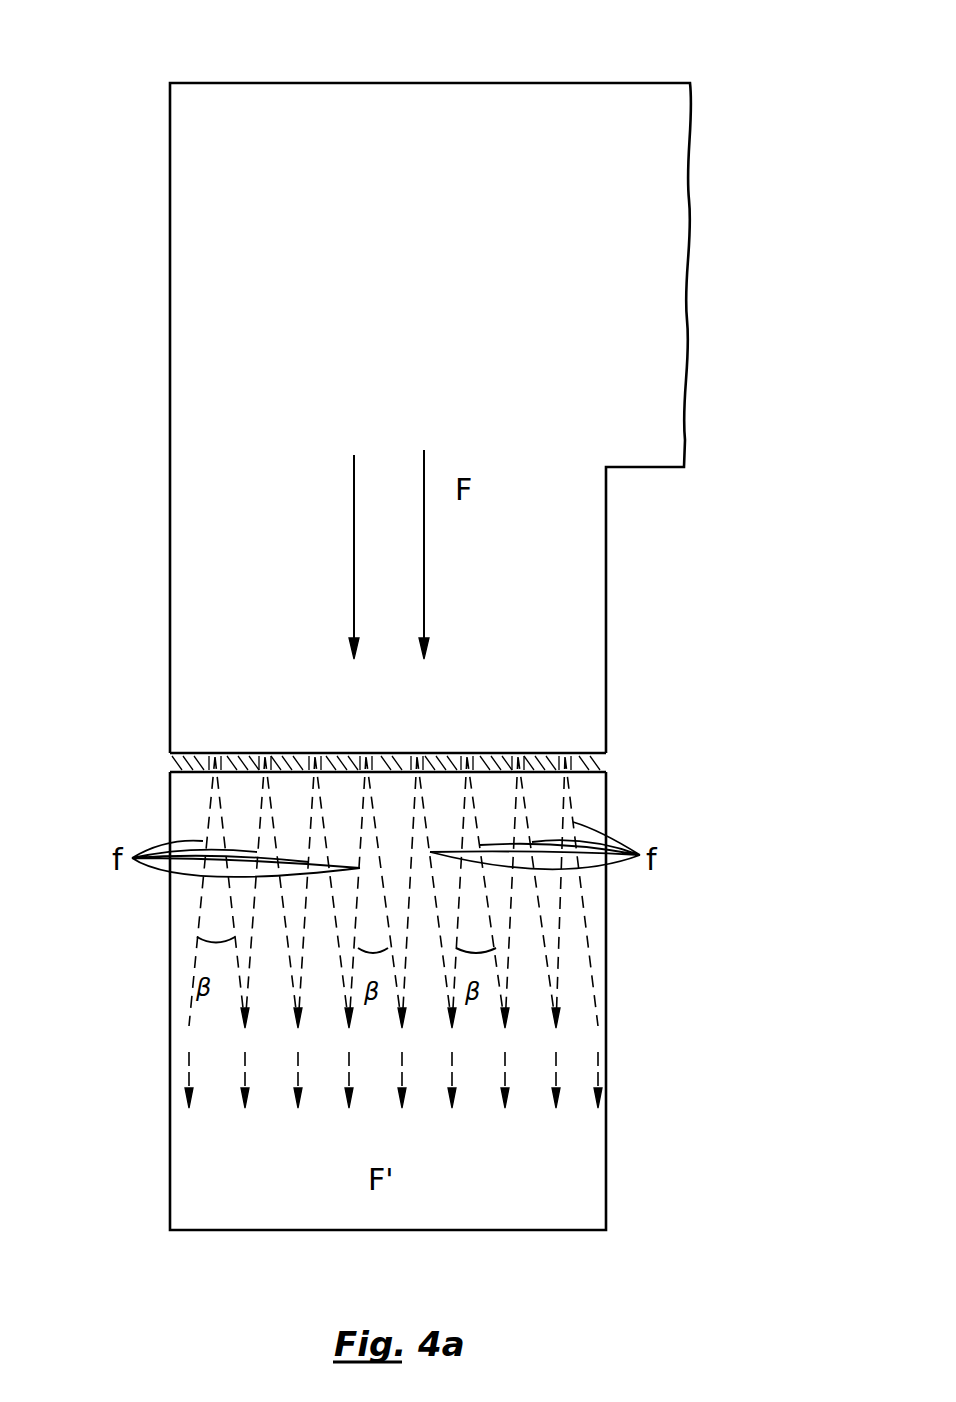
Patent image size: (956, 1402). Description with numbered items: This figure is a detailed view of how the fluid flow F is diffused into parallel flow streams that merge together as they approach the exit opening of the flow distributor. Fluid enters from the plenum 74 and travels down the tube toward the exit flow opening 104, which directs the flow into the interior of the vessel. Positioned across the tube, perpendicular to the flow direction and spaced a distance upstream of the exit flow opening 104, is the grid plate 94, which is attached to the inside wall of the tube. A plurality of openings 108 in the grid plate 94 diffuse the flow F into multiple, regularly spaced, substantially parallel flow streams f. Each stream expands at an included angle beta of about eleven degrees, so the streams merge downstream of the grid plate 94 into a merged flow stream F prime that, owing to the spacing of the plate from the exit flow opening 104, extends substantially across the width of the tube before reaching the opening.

The plenum 74 is at (402, 82).
The grid plate 94 is at (556, 700).
The openings 108 is at (490, 700).
The exit flow opening 104 is at (532, 1232).